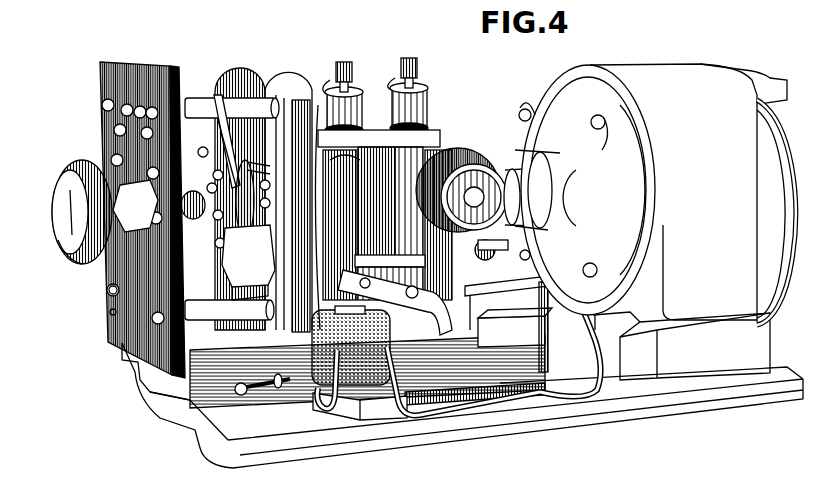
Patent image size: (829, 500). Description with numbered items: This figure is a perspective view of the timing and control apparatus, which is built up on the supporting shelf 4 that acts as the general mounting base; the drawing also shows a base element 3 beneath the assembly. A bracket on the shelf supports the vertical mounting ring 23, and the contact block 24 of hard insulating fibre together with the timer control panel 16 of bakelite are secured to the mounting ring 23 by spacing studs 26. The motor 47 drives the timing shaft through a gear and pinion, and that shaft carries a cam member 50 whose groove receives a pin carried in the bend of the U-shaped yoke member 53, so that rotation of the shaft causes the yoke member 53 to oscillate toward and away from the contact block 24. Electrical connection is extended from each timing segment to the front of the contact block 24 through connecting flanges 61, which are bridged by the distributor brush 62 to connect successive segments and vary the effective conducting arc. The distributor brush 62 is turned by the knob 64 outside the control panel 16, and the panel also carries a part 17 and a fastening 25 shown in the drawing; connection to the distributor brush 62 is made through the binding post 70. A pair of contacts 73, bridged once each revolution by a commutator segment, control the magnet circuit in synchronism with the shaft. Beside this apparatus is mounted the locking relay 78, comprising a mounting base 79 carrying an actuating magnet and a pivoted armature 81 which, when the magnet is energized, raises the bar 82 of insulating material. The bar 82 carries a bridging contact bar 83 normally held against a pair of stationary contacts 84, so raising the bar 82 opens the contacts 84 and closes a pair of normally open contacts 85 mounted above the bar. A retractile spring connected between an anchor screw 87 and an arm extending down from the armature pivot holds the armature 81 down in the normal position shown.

The base plate 3 is at (496, 405).
The supporting shelf 4 is at (312, 445).
The timer control panel 16 is at (130, 64).
The knob shaft 17 is at (58, 240).
The vertical mounting ring 23 is at (283, 73).
The contact block 24 is at (240, 78).
The panel fastener 25 is at (108, 312).
The spacing studs 26 is at (195, 98).
The motor 47 is at (700, 169).
The cam member 50 is at (408, 165).
The U-shaped yoke member 53 is at (380, 130).
The connecting flanges 61 is at (248, 262).
The distributor brush 62 is at (217, 243).
The knob 64 is at (80, 162).
The binding post 70 is at (214, 108).
The contacts 73 is at (480, 250).
The locking relay 78 is at (467, 383).
The mounting base 79 is at (365, 408).
The armature 81 is at (395, 302).
The bar 82 is at (515, 327).
The bridging contact bar 83 is at (530, 357).
The stationary contacts 84 is at (537, 397).
The normally open contacts 85 is at (485, 288).
The anchor screw 87 is at (262, 393).